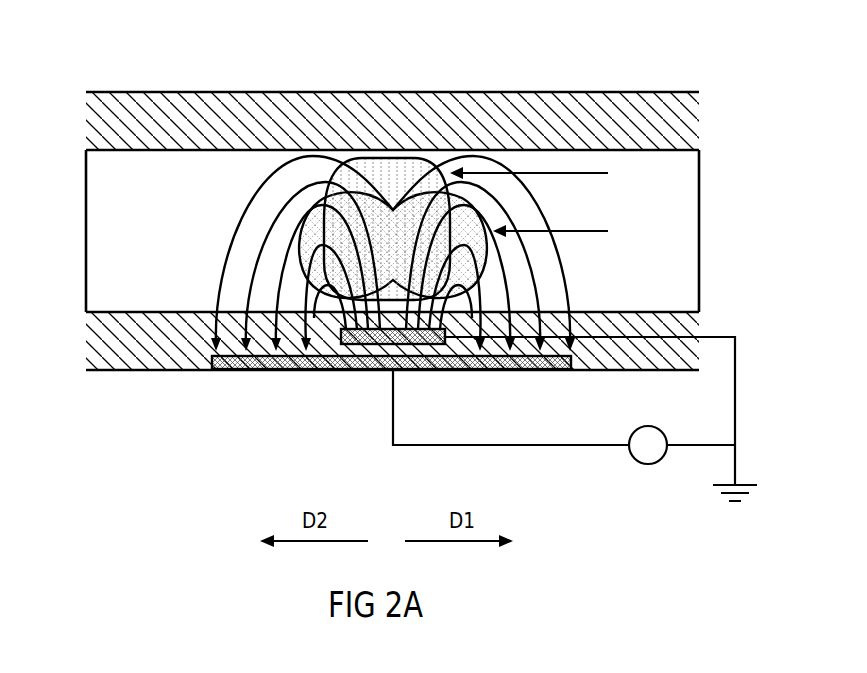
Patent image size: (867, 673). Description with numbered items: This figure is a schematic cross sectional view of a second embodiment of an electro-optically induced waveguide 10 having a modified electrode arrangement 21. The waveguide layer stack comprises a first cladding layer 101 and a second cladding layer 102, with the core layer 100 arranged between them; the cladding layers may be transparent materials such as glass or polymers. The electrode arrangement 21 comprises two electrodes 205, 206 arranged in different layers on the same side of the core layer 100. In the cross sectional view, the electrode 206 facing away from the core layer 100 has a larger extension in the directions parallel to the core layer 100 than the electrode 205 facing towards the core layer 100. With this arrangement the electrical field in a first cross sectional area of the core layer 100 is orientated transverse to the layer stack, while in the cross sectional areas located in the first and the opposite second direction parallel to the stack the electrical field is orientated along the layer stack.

The electro-optically induced waveguide 10 is at (78, 70).
The first cladding layer 101 is at (700, 123).
The core layer 100 is at (700, 232).
The electrode arrangement 21 is at (64, 309).
The second cladding layer 102 is at (86, 340).
The electrode facing towards the core layer 205 is at (262, 372).
The electrode facing away from the core layer 206 is at (360, 347).